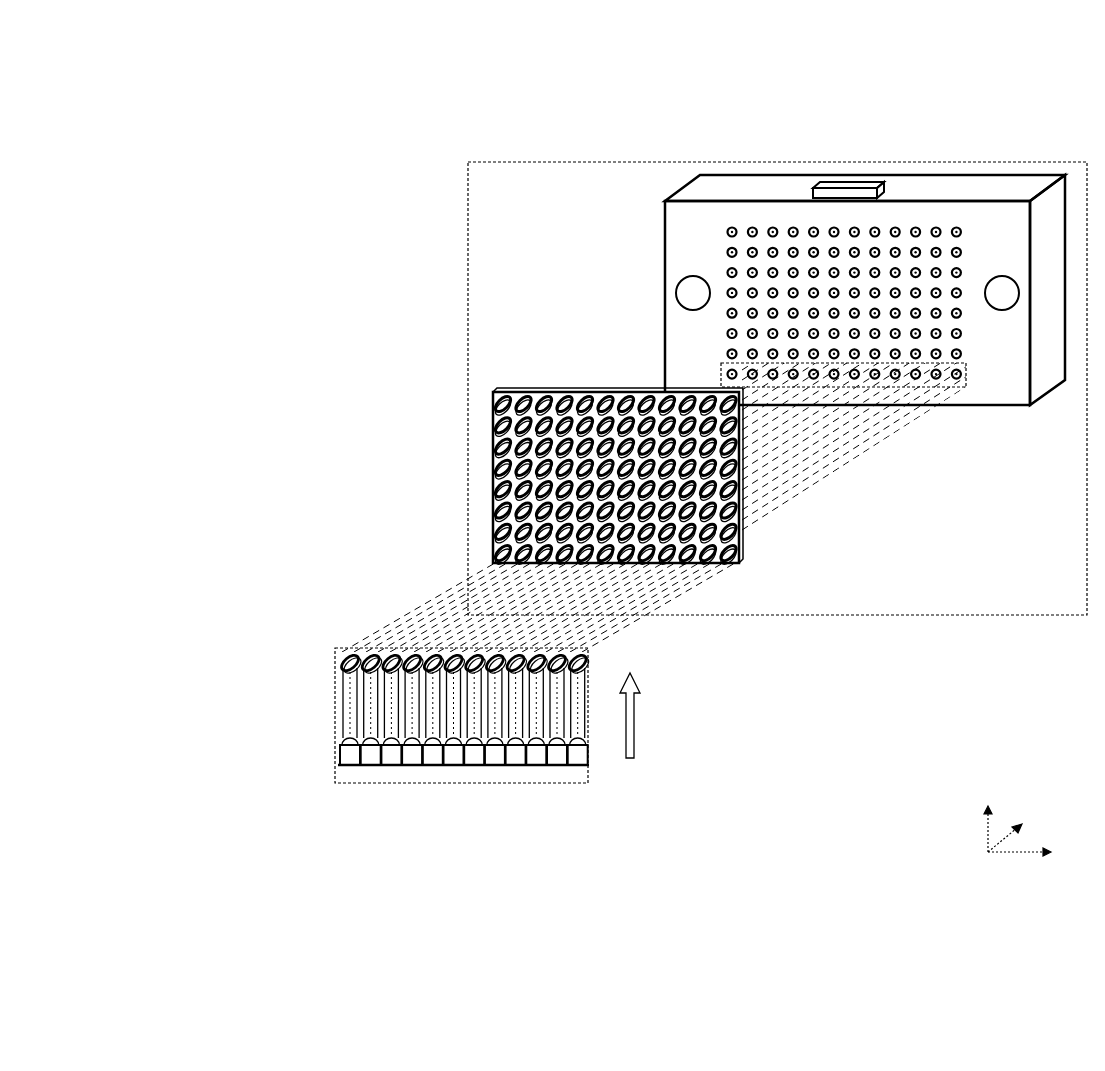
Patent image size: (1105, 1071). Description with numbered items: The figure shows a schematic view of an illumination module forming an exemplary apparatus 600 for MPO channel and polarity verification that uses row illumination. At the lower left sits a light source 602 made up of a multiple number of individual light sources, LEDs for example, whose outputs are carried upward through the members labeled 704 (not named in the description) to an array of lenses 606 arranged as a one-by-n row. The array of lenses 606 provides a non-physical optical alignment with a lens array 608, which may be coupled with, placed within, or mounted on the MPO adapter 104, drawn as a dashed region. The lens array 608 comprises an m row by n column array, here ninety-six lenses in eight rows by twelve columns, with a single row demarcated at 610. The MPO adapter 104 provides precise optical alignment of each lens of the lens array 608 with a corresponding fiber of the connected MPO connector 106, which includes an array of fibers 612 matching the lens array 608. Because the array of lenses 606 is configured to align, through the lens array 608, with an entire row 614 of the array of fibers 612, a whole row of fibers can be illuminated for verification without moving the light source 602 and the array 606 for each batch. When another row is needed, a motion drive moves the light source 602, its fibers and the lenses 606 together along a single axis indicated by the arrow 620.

The apparatus 600 is at (90, 41).
The MPO adapter 104 is at (926, 617).
The MPO connector 106 is at (1013, 177).
The array of fibers 612 is at (958, 213).
The row of the array of fibers 614 is at (947, 407).
The lens array 608 is at (725, 387).
The single row of the lens array 610 is at (742, 550).
The light source 602 is at (338, 757).
The light guide columns 704 is at (338, 707).
The array of lenses 606 is at (338, 660).
The arrow 620 is at (697, 715).